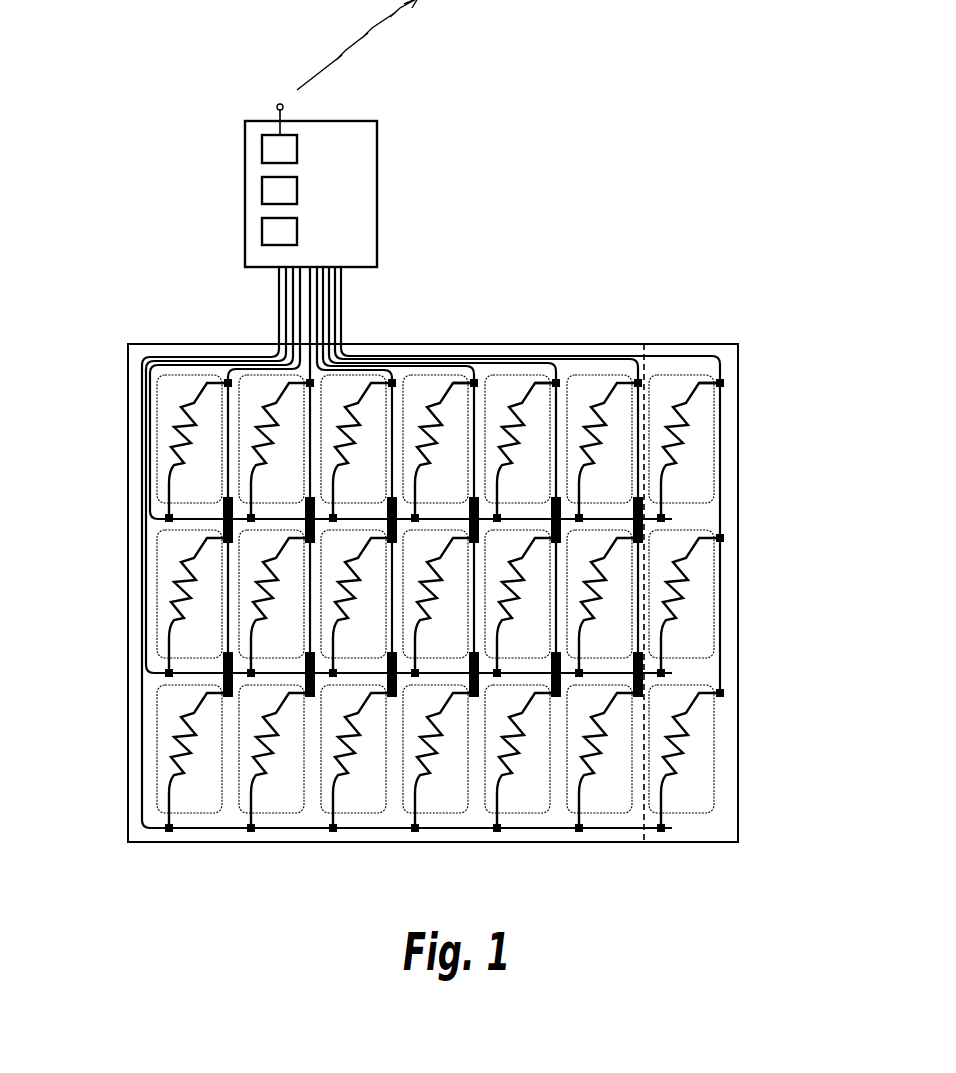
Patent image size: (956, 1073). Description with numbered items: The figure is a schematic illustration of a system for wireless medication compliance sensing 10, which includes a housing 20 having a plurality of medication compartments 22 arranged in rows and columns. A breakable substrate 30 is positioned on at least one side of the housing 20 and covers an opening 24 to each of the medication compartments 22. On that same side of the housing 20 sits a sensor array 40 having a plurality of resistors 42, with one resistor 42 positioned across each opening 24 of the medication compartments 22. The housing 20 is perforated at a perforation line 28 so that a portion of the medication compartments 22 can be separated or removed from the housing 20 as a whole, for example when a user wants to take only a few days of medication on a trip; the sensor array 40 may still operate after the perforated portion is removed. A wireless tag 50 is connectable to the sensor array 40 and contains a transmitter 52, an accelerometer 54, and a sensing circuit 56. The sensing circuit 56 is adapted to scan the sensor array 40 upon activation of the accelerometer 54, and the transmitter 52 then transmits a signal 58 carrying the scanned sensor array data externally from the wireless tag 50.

The system for wireless medication compliance sensing 10 is at (658, 193).
The housing 20 is at (740, 352).
The medication compartments 22 is at (707, 447).
The opening 24 is at (688, 483).
The perforation line 28 is at (648, 373).
The breakable substrate 30 is at (583, 357).
The sensor array 40 is at (460, 346).
The resistors 42 is at (443, 385).
The wireless tag 50 is at (363, 212).
The transmitter 52 is at (265, 148).
The accelerometer 54 is at (282, 193).
The sensing circuit 56 is at (265, 237).
The signal 58 is at (368, 32).